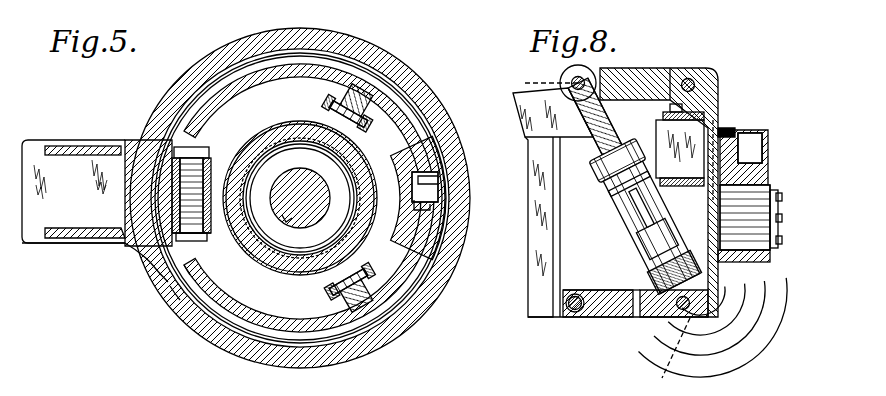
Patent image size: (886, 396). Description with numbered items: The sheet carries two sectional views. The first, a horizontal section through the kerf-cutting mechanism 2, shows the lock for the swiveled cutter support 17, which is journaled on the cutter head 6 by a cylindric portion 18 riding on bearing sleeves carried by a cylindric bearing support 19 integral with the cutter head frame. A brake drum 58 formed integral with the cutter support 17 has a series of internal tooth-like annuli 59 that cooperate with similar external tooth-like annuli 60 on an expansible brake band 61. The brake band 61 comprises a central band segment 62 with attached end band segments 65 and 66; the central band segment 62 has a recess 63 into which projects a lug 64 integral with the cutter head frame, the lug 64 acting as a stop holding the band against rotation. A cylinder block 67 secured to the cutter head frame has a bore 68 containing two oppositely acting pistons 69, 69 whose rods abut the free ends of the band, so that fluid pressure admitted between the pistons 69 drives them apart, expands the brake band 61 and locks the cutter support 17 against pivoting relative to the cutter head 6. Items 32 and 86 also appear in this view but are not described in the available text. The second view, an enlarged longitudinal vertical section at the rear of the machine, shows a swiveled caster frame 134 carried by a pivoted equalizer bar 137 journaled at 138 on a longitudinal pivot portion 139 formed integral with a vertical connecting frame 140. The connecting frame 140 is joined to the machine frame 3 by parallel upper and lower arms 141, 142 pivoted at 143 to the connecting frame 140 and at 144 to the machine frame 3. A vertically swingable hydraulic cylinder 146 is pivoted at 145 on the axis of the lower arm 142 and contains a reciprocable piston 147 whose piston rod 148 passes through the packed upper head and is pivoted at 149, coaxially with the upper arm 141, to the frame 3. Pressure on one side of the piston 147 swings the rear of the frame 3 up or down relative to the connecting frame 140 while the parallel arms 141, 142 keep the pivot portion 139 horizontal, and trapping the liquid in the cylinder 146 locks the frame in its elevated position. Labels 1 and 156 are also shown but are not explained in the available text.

In FIG. 5, the kerf-cutting mechanism 2 is at (49, 134).
In FIG. 5, the cutter support 17 is at (112, 140).
In FIG. 5, the brake drum 58 is at (165, 268).
In FIG. 5, the internal tooth-like annuli 59 is at (115, 241).
In FIG. 5, the cutter head 6 is at (460, 240).
In FIG. 5, the end band segment 65 is at (238, 94).
In FIG. 5, the central band segment 62 is at (420, 146).
In FIG. 5, the recess 63 is at (444, 180).
In FIG. 5, the lug 64 is at (440, 194).
In FIG. 5, the cylindric portion 18 is at (303, 106).
In FIG. 5, the cylindric bearing support 19 is at (291, 216).
In FIG. 5, the cylinder block 67 is at (213, 160).
In FIG. 5, the bearing 32 is at (256, 254).
In FIG. 5, the bore 68 is at (252, 250).
In FIG. 5, the pistons 69 is at (175, 148).
In FIG. 5, the end band segment 66 is at (183, 282).
In FIG. 5, the expansible brake band 61 is at (190, 318).
In FIG. 5, the external tooth-like annuli 60 is at (205, 332).
In FIG. 5, the spring 86 is at (157, 388).
In FIG. 8, the piston rod 148 is at (602, 112).
In FIG. 8, the upper arm 141 is at (672, 70).
In FIG. 8, the pivotal connection to connecting frame 143 is at (702, 72).
In FIG. 8, the frame 1 is at (519, 254).
In FIG. 8, the machine frame 3 is at (530, 296).
In FIG. 8, the pivotal connection of piston rod 149 is at (566, 72).
In FIG. 8, the pivotal connection to machine frame 144 is at (535, 358).
In FIG. 8, the hydraulic cylinder 146 is at (622, 202).
In FIG. 8, the piston 147 is at (640, 255).
In FIG. 8, the swiveled caster frame 134 is at (662, 178).
In FIG. 8, the vertical connecting frame 140 is at (716, 126).
In FIG. 8, the equalizer bar 137 is at (734, 134).
In FIG. 8, the longitudinal pivot portion 139 is at (766, 164).
In FIG. 8, the journal of equalizer bar 138 is at (750, 282).
In FIG. 8, the base plate 156 is at (548, 318).
In FIG. 8, the cylinder pivot 145 is at (655, 318).
In FIG. 8, the lower arm 142 is at (578, 314).